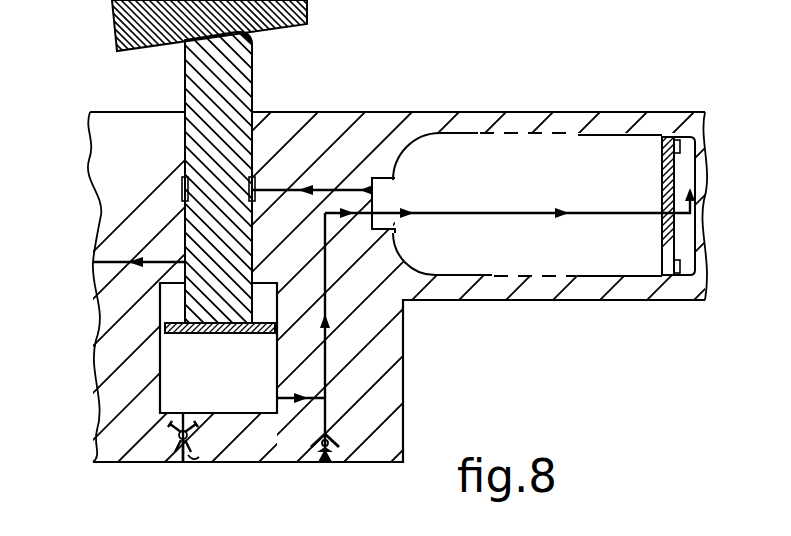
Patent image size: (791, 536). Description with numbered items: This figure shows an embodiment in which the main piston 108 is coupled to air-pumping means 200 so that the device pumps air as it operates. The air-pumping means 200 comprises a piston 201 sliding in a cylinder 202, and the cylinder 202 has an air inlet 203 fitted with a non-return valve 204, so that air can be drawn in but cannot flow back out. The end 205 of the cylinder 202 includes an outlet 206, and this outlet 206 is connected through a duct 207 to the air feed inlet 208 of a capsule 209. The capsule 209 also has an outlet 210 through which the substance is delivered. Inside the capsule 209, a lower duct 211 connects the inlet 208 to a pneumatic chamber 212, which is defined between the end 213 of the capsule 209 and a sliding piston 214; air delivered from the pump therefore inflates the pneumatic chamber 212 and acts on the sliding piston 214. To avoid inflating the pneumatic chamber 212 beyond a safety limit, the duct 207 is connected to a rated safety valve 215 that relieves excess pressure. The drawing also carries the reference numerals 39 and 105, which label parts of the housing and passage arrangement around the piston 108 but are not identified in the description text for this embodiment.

The fluid passage 39 is at (110, 258).
The housing 105 is at (313, 183).
The piston 108 is at (252, 75).
The air-pumping means 200 is at (241, 400).
The piston 201 is at (165, 327).
The cylinder 202 is at (165, 362).
The air inlet 203 is at (195, 465).
The non-return valve 204 is at (182, 455).
The end of the cylinder 205 is at (281, 420).
The outlet 206 is at (278, 398).
The duct 207 is at (330, 350).
The air feed inlet 208 is at (378, 200).
The capsule 209 is at (588, 278).
The outlet 210 is at (394, 180).
The lower duct 211 is at (548, 213).
The pneumatic chamber 212 is at (692, 239).
The end 213 is at (689, 278).
The sliding piston 214 is at (667, 137).
The rated safety valve 215 is at (330, 462).